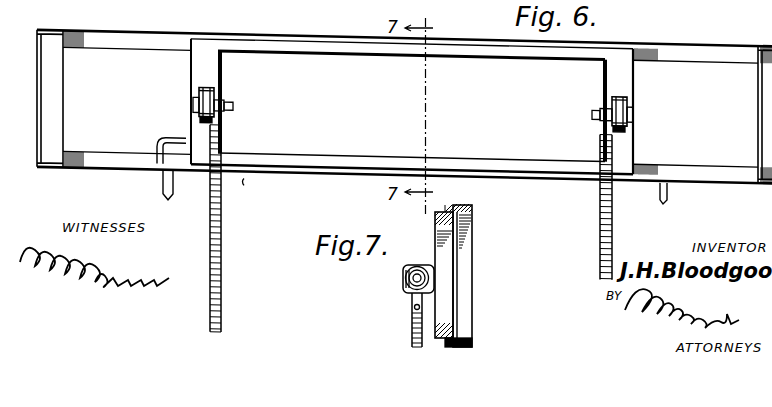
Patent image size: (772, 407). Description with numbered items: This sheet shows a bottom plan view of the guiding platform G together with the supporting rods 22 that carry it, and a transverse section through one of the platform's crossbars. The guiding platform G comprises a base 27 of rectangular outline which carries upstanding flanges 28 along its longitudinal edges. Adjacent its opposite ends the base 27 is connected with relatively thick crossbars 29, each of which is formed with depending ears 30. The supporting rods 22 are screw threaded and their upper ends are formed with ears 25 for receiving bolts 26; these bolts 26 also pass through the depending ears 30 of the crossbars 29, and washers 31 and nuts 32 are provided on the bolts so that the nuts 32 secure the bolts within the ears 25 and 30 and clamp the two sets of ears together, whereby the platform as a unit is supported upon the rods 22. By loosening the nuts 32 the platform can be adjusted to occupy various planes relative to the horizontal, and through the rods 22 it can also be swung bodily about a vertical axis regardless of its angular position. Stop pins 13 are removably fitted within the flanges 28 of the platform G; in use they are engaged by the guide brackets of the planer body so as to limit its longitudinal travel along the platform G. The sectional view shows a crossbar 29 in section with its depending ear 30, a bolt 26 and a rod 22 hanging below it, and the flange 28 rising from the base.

In FIG. 6, the stop pin 13 is at (168, 193).
In FIG. 6, the supporting rod 22 is at (232, 218).
In FIG. 7, the supporting rod 22 is at (412, 322).
In FIG. 6, the ear 25 is at (232, 112).
In FIG. 6, the bolt 26 is at (194, 106).
In FIG. 7, the bolt 26 is at (410, 290).
In FIG. 6, the base 27 is at (60, 124).
In FIG. 7, the upstanding flange 28 is at (472, 281).
In FIG. 6, the crossbar 29 is at (193, 62).
In FIG. 7, the crossbar 29 is at (447, 305).
In FIG. 6, the depending ear 30 is at (213, 91).
In FIG. 7, the depending ear 30 is at (405, 268).
In FIG. 6, the washer 31 is at (199, 92).
In FIG. 6, the nut 32 is at (236, 103).
In FIG. 7, the guiding platform G is at (473, 214).